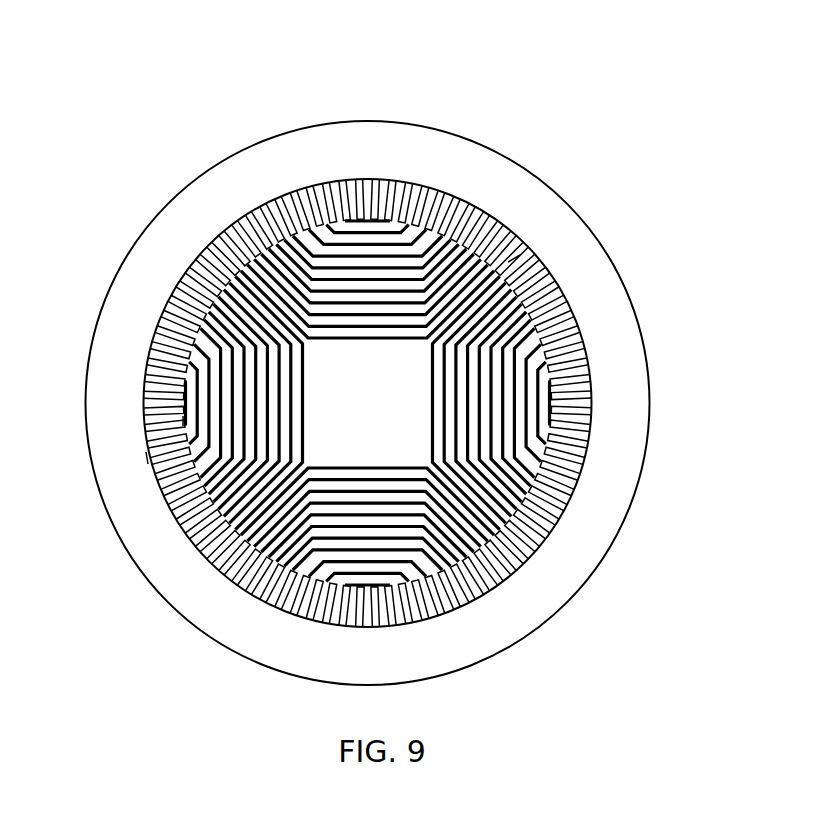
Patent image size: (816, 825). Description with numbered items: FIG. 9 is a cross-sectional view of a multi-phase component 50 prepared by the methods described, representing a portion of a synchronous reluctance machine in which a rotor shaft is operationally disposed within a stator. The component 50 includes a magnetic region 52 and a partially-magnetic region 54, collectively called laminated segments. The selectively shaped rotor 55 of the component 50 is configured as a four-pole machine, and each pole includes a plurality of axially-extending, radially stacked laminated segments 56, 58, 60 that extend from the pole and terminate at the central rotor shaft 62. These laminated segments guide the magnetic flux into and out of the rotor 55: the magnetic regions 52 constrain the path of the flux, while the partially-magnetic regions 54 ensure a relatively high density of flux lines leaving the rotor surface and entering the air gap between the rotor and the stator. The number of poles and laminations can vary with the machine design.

The component 50 is at (632, 104).
The magnetic region 52 is at (548, 400).
The partially-magnetic region 54 is at (496, 536).
The rotor 55 is at (508, 266).
The laminated segment 56 is at (184, 422).
The laminated segment 58 is at (148, 458).
The laminated segment 60 is at (228, 500).
The central rotor shaft 62 is at (354, 416).